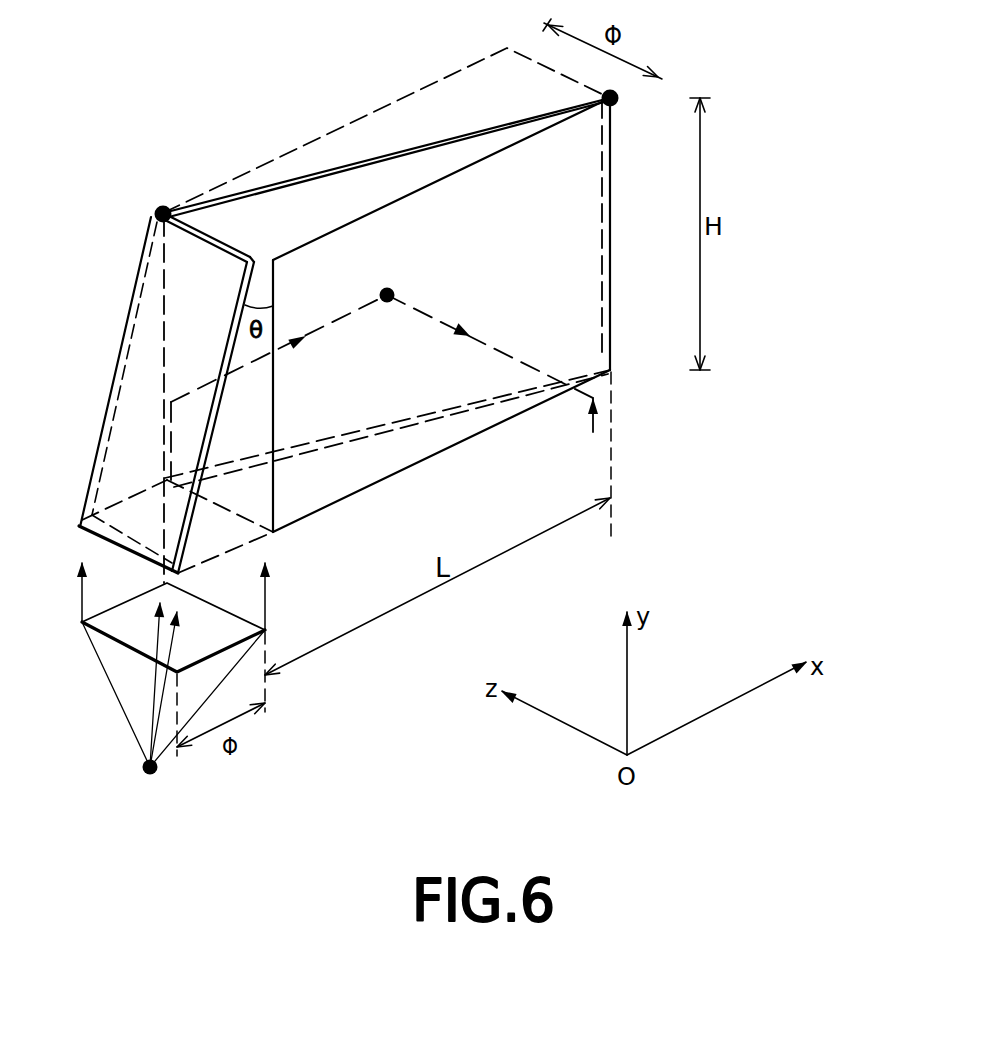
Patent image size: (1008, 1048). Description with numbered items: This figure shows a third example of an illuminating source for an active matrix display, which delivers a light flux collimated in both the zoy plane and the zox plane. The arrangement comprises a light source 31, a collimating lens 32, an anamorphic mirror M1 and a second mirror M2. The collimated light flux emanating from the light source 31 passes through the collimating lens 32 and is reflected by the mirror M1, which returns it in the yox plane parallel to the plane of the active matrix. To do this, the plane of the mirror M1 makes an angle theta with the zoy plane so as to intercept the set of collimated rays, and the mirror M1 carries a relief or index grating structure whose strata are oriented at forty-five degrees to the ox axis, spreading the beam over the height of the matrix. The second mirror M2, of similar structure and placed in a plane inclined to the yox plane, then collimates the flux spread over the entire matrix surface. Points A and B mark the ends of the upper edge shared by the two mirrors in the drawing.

The light source 31 is at (143, 767).
The collimating lens 32 is at (123, 625).
The anamorphic mirror M1 is at (140, 407).
The second mirror M2 is at (415, 146).
The point A is at (160, 211).
The point B is at (618, 100).